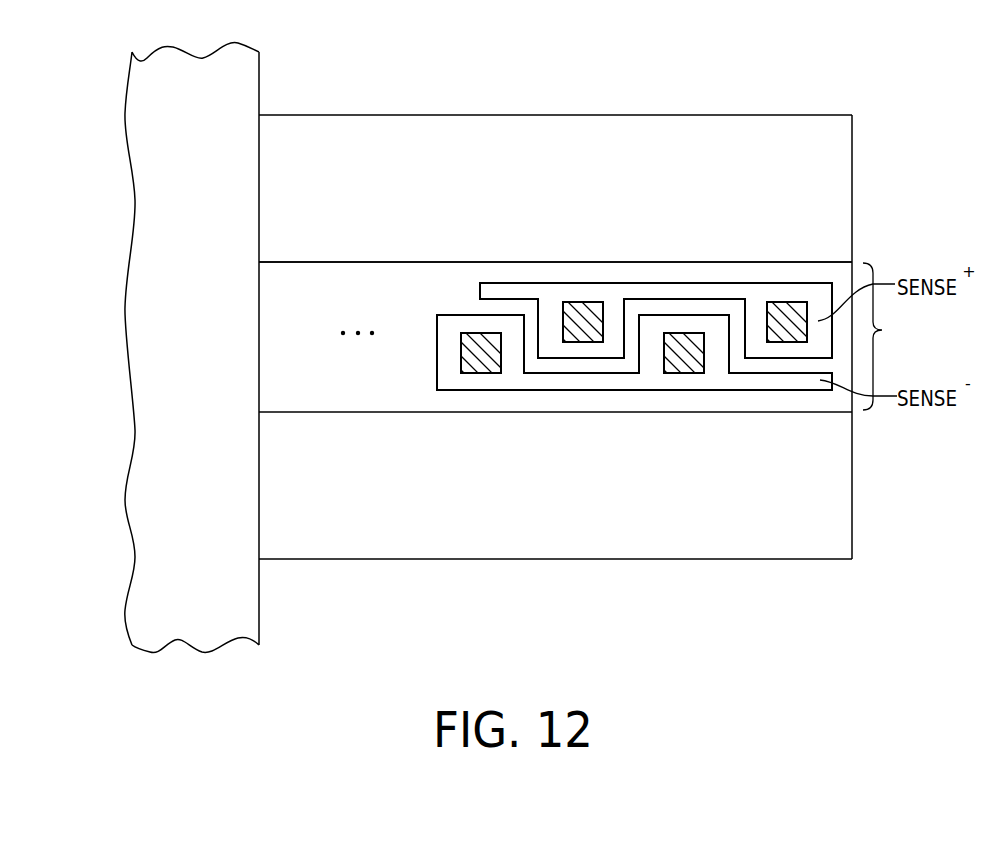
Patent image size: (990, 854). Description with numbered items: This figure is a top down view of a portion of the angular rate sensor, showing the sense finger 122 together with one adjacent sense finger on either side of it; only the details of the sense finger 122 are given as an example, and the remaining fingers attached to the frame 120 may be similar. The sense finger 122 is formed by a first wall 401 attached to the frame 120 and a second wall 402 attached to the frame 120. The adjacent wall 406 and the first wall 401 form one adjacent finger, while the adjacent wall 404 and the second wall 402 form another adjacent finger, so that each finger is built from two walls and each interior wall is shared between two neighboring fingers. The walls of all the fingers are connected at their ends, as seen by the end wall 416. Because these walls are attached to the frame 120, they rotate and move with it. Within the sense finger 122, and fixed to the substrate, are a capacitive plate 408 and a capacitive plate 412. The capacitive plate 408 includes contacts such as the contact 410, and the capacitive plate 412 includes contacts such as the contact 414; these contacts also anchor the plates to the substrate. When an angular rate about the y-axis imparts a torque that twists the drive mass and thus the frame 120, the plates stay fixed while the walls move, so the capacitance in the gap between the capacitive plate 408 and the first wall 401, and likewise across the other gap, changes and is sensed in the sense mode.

The frame 120 is at (181, 217).
The adjacent wall 406 is at (777, 113).
The end wall 416 is at (866, 183).
The first wall 401 is at (813, 262).
The second wall 402 is at (787, 413).
The adjacent wall 404 is at (787, 560).
The capacitive plate 408 is at (804, 294).
The capacitive plate 412 is at (717, 372).
The contact 410 is at (782, 308).
The contact 414 is at (686, 371).
The sense finger 122 is at (888, 336).